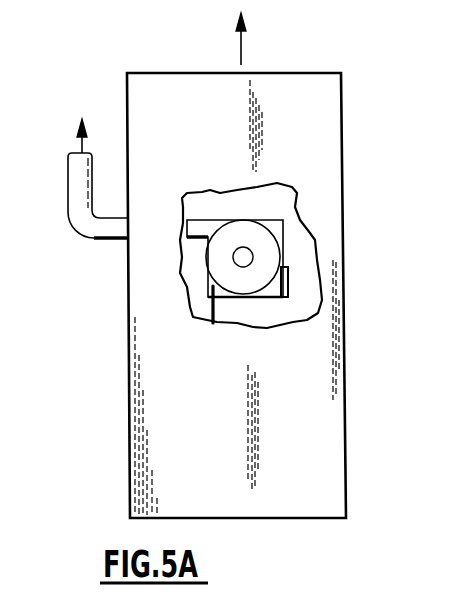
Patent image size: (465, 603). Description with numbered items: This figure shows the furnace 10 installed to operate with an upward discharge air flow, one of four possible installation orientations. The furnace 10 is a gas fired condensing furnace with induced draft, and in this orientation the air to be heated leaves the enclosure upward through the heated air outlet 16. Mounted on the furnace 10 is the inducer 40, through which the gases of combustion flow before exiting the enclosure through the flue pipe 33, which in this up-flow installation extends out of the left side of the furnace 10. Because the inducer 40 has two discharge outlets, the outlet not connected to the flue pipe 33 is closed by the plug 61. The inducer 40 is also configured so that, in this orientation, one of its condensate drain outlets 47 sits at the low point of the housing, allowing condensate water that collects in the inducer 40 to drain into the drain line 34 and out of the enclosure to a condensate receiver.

The furnace 10 is at (347, 132).
The heated air outlet 16 is at (242, 47).
The flue pipe 33 is at (86, 238).
The drain line 34 is at (212, 310).
The inducer 40 is at (252, 208).
The condensate drain outlet 47 is at (205, 289).
The plug 61 is at (288, 274).